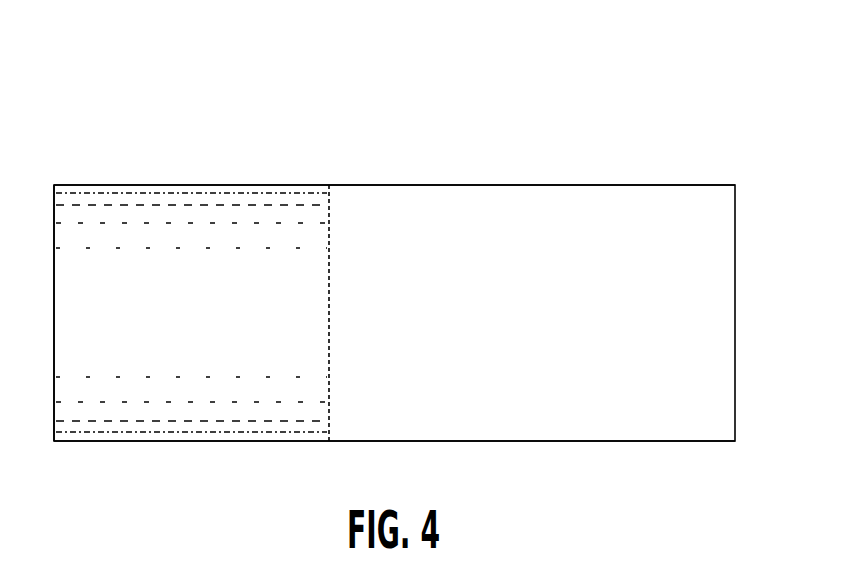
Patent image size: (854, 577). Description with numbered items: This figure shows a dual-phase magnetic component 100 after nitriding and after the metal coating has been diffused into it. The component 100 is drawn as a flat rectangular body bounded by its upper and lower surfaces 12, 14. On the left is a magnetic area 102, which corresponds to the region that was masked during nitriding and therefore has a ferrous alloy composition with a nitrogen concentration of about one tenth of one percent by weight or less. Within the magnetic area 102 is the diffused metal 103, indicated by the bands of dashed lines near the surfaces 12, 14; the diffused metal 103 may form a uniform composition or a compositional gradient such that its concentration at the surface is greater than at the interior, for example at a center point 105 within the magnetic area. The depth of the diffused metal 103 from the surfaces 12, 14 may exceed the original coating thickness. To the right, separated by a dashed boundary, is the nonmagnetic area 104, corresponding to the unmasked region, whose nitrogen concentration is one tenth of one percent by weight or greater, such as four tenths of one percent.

The dual-phase magnetic component 100 is at (656, 119).
The surface 12 is at (373, 186).
The surface 14 is at (247, 441).
The magnetic area 102 is at (223, 262).
The diffused metal 103 is at (128, 212).
The nonmagnetic area 104 is at (523, 217).
The center point 105 is at (175, 316).